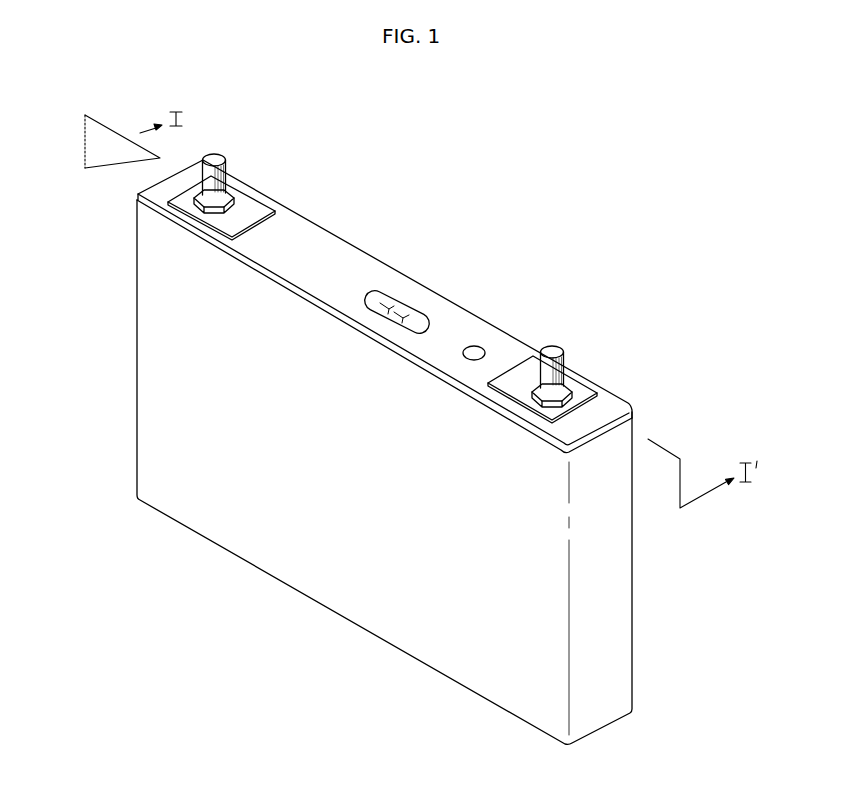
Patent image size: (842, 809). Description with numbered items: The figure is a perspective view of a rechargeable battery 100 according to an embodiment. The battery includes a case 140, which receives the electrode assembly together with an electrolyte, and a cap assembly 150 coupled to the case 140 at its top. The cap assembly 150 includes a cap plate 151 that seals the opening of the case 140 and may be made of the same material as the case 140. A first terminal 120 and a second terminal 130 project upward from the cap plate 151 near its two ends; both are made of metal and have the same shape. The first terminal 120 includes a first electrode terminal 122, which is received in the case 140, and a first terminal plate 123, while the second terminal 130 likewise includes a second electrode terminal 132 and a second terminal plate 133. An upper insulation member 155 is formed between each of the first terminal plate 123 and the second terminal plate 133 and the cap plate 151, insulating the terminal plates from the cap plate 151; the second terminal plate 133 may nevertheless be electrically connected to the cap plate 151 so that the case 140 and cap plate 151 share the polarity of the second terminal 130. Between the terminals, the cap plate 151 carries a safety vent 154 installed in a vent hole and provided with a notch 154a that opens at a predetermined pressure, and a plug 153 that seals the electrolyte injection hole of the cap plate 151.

The rechargeable battery 100 is at (612, 130).
The first terminal 120 is at (209, 141).
The first electrode terminal 122 is at (232, 147).
The first terminal plate 123 is at (238, 176).
The second terminal 130 is at (549, 331).
The second electrode terminal 132 is at (570, 339).
The second terminal plate 133 is at (577, 369).
The case 140 is at (335, 595).
The cap assembly 150 is at (365, 253).
The cap plate 151 is at (303, 230).
The plug 153 is at (475, 347).
The safety vent 154 is at (398, 295).
The notch 154a is at (405, 313).
The upper insulation member 155 is at (265, 208).